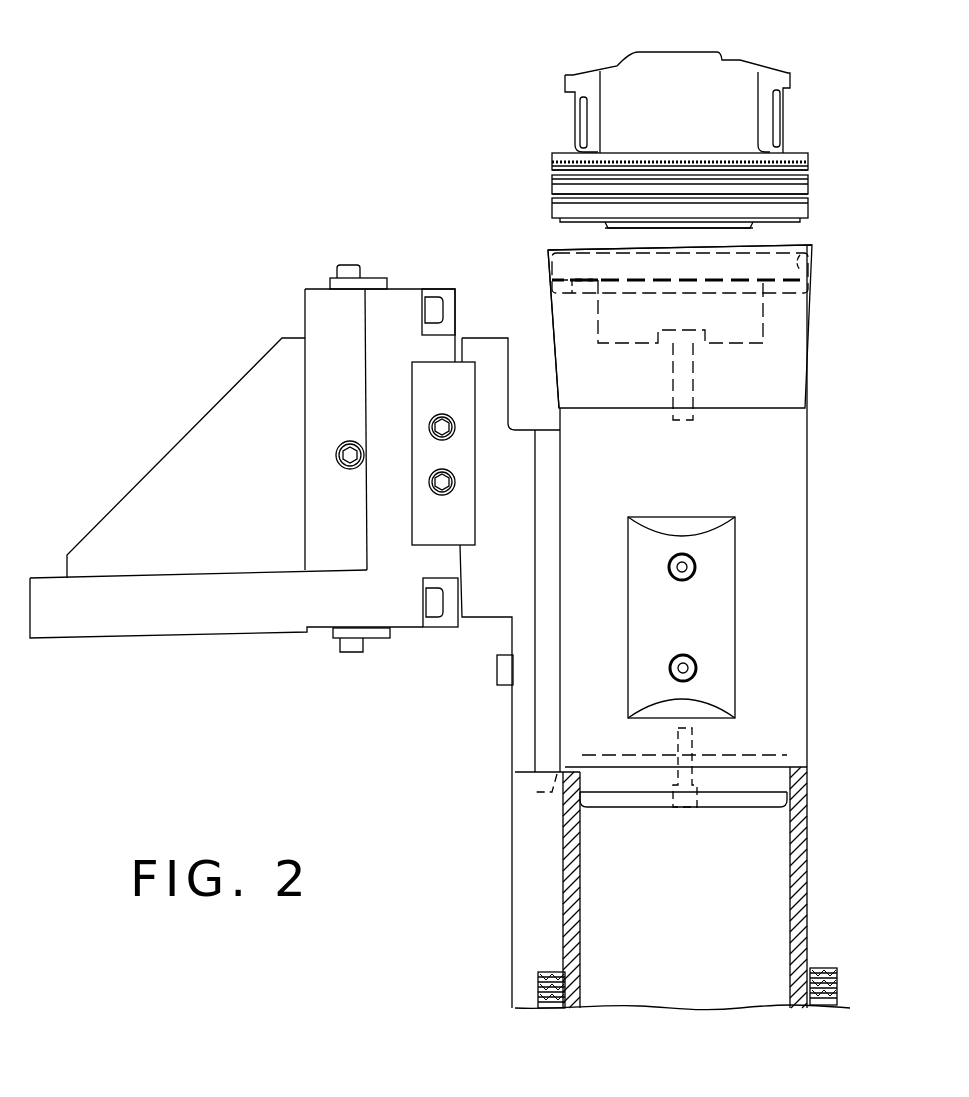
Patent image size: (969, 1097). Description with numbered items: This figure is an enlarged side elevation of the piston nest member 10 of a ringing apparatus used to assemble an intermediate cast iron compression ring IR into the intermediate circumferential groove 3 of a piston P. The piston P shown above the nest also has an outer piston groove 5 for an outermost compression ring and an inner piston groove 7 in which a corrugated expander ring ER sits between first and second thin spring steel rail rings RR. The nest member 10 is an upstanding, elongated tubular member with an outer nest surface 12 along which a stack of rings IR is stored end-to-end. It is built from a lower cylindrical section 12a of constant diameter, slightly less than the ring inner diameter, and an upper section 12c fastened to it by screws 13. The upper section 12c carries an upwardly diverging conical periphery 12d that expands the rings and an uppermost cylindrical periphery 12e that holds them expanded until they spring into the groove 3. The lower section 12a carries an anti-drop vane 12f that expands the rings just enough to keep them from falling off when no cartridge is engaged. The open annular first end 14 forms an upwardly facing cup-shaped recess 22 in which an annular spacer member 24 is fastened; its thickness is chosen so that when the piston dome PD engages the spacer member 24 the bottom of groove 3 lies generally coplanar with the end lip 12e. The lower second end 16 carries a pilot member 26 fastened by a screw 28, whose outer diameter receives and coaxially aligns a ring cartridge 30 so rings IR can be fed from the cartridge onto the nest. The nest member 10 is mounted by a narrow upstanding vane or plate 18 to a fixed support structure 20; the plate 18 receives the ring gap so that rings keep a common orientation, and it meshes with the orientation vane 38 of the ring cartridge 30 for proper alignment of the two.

The piston P is at (770, 62).
The inner piston groove 7 is at (790, 152).
The intermediate circumferential groove 3 is at (808, 182).
The outer piston groove 5 is at (808, 200).
The rail rings RR is at (568, 160).
The expander ring ER is at (555, 170).
The piston dome PD is at (604, 231).
The piston nest member 10 is at (691, 644).
The outer nest surface 12 is at (693, 617).
The lower cylindrical section 12a is at (797, 488).
The upper section 12c is at (818, 344).
The conical periphery 12d is at (797, 312).
The uppermost cylindrical periphery 12e is at (548, 253).
The anti-drop vane 12f is at (681, 617).
The screws 13 is at (690, 380).
The annular first end 14 is at (812, 246).
The lower second end 16 is at (807, 752).
The vane or plate 18 is at (545, 702).
The fixed support structure 20 is at (376, 654).
The cup-shaped recess 22 is at (815, 275).
The spacer member 24 is at (548, 283).
The pilot member 26 is at (735, 805).
The screw 28 is at (686, 806).
The ring cartridge 30 is at (805, 947).
The orientation vane 38 is at (515, 1000).
The intermediate compression ring IR is at (833, 995).